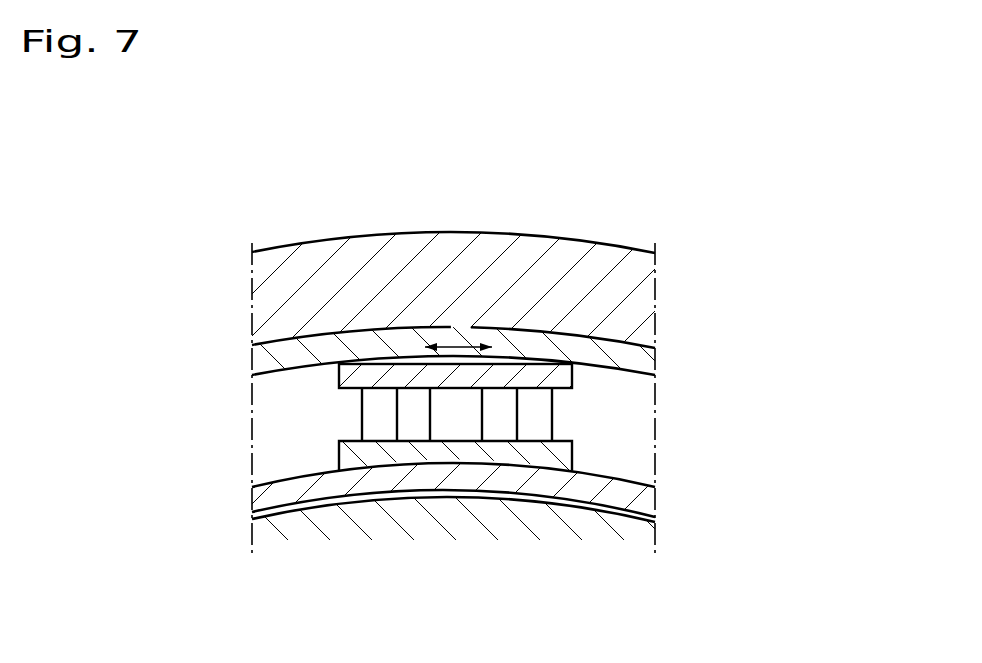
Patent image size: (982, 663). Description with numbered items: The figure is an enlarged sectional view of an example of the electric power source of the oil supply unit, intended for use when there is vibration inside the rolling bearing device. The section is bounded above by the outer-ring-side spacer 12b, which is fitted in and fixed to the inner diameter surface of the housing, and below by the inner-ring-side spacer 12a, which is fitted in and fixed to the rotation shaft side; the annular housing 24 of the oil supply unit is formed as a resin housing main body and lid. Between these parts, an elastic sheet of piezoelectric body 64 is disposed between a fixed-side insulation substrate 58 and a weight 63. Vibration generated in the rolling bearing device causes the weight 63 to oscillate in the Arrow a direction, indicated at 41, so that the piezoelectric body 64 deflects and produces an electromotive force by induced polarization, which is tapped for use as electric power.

The inner-ring-side spacer 12a is at (642, 529).
The outer-ring-side spacer 12b is at (643, 305).
The annular housing 24 is at (327, 348).
The gap 41 is at (438, 328).
The fixed-side insulation substrate 58 is at (500, 456).
The weight 63 is at (528, 380).
The piezoelectric body 64 is at (409, 427).